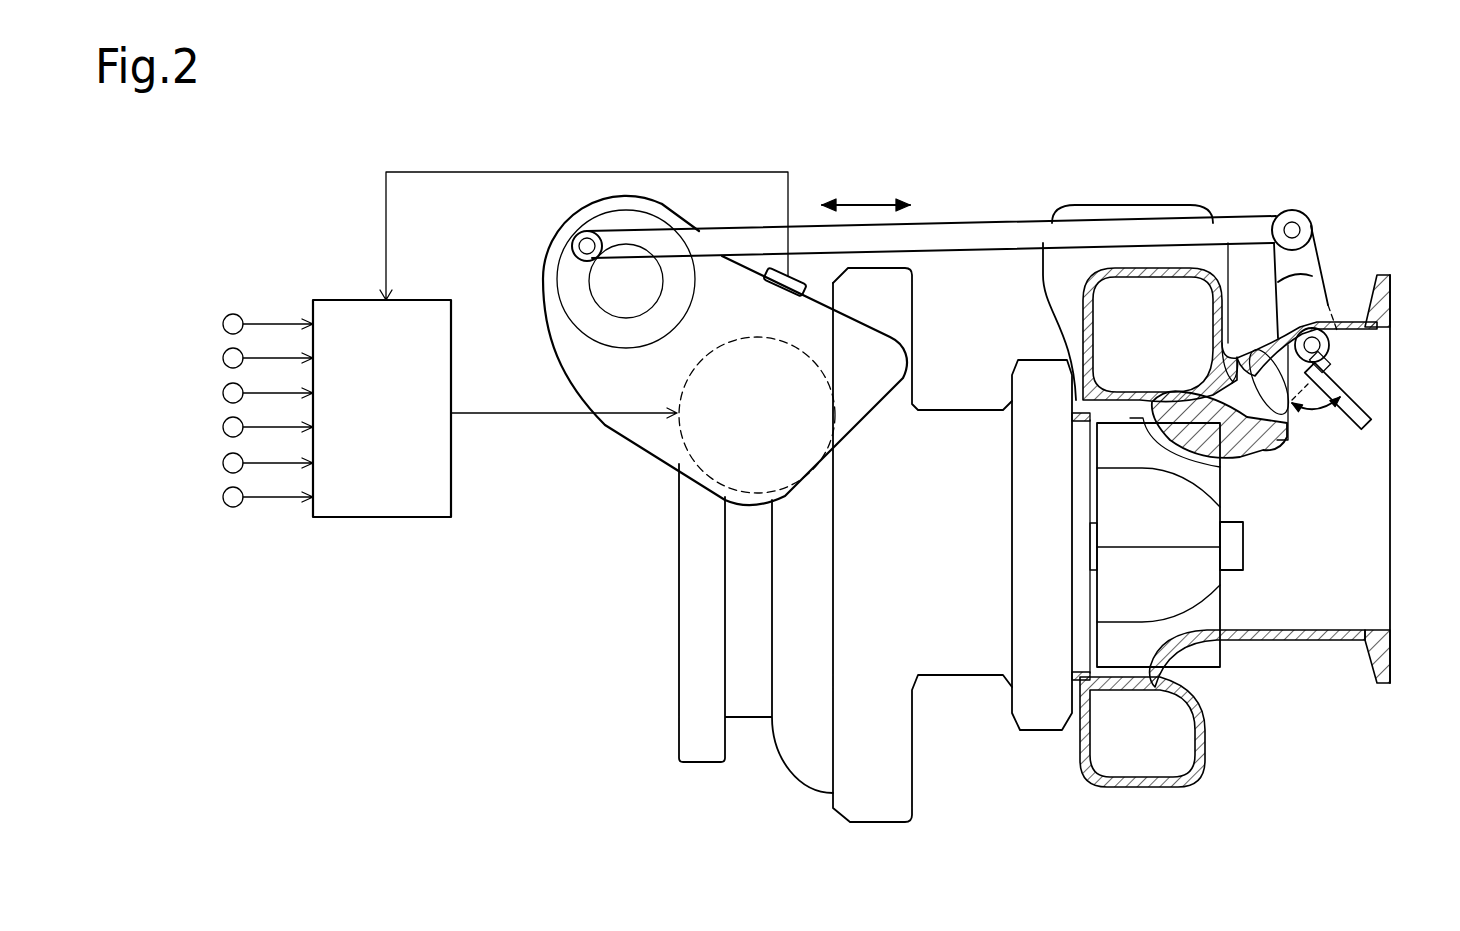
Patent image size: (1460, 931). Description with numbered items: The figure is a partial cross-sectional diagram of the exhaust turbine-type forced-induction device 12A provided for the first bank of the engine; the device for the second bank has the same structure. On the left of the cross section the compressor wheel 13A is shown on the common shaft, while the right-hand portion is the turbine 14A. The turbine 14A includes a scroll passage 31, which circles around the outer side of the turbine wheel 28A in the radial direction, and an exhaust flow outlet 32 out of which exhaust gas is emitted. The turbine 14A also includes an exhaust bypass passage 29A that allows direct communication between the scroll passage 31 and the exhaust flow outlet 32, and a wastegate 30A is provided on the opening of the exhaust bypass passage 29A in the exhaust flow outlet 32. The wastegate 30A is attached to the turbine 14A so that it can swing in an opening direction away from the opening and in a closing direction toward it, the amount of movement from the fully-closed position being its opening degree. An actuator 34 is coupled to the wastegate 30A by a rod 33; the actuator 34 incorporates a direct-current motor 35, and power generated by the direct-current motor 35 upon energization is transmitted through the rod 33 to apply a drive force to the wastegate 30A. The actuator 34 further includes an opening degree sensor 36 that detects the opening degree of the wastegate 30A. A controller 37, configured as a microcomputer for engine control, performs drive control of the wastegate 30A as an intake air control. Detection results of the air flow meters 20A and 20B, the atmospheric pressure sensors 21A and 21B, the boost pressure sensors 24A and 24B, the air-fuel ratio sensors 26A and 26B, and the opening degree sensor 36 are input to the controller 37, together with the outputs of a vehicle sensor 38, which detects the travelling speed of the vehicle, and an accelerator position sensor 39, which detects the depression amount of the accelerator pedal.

The exhaust turbine-type forced-induction device 12A is at (1325, 190).
The compressor wheel 13A is at (811, 771).
The turbine 14A is at (1258, 641).
The air flow meter 20A is at (197, 327).
The air flow meter 20B is at (223, 324).
The atmospheric pressure sensor 21A is at (197, 361).
The atmospheric pressure sensor 21B is at (223, 358).
The boost pressure sensor 24A is at (197, 396).
The boost pressure sensor 24B is at (223, 393).
The air-fuel ratio sensor 26A is at (197, 430).
The air-fuel ratio sensor 26B is at (223, 427).
The turbine wheel 28A is at (1212, 598).
The exhaust bypass passage 29A is at (1247, 357).
The wastegate 30A is at (1365, 404).
The scroll passage 31 is at (1107, 333).
The exhaust flow outlet 32 is at (1353, 497).
The rod 33 is at (975, 226).
The actuator 34 is at (563, 368).
The direct-current motor 35 is at (683, 388).
The opening degree sensor 36 is at (780, 272).
The controller 37 is at (387, 519).
The vehicle sensor 38 is at (223, 463).
The accelerator position sensor 39 is at (223, 497).